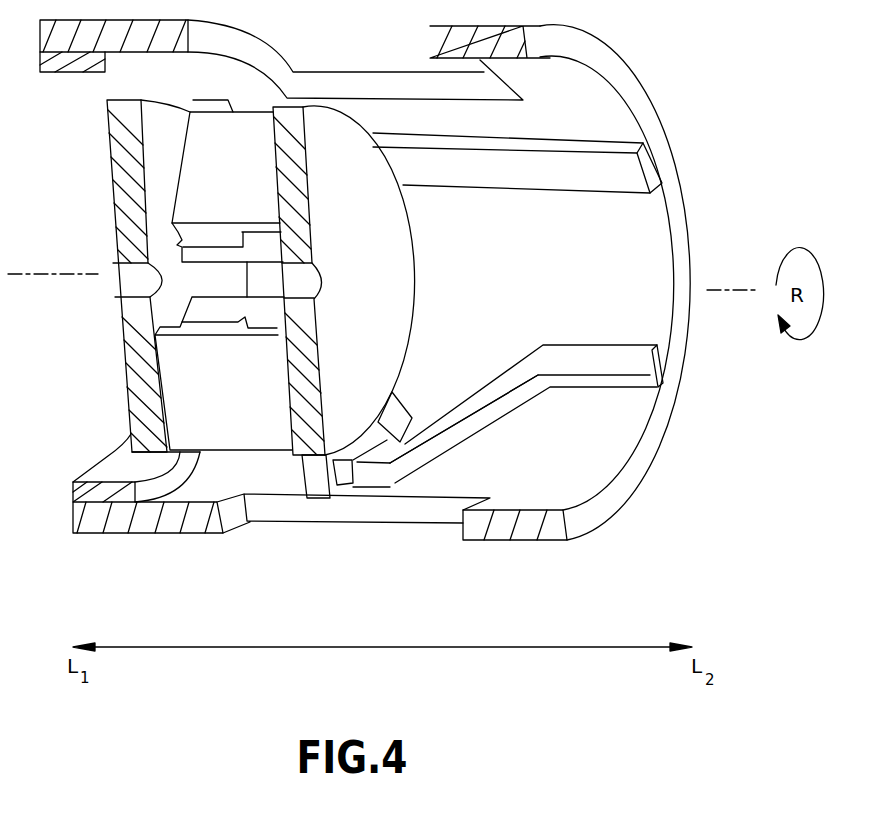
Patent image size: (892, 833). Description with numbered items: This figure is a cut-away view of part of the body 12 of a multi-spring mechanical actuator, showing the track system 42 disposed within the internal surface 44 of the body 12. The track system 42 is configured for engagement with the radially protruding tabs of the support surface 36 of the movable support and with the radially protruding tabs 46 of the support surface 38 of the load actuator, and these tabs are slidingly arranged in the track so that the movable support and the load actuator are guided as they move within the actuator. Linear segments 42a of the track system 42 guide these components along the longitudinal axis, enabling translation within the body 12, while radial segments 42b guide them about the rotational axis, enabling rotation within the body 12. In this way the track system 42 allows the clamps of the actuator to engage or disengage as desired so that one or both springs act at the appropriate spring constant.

The body 12 is at (376, 290).
The support surface 36 is at (157, 162).
The support surface 38 is at (323, 137).
The track system 42 is at (543, 300).
The linear segments 42a is at (455, 172).
The radial segments 42b is at (482, 408).
The internal surface 44 is at (673, 313).
The radially protruding tabs 46 is at (392, 427).